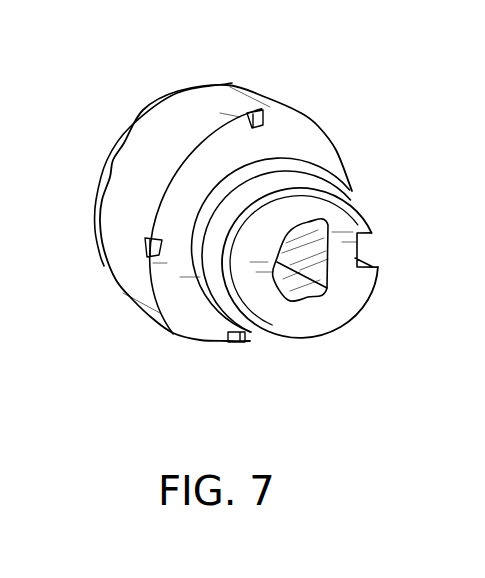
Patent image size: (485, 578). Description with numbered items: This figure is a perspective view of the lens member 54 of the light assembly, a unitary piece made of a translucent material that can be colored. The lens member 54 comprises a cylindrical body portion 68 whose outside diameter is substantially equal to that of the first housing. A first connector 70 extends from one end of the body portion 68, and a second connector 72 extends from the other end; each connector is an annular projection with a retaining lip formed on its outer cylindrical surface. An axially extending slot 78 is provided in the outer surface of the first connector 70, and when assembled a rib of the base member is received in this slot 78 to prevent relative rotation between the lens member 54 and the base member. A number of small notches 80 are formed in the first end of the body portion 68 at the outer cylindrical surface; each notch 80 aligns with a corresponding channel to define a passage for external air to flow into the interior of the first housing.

The lens member 54 is at (153, 319).
The cylindrical body portion 68 is at (114, 244).
The first connector 70 is at (318, 333).
The second connector 72 is at (111, 157).
The axially extending slot 78 is at (366, 239).
The notches 80 is at (247, 114).